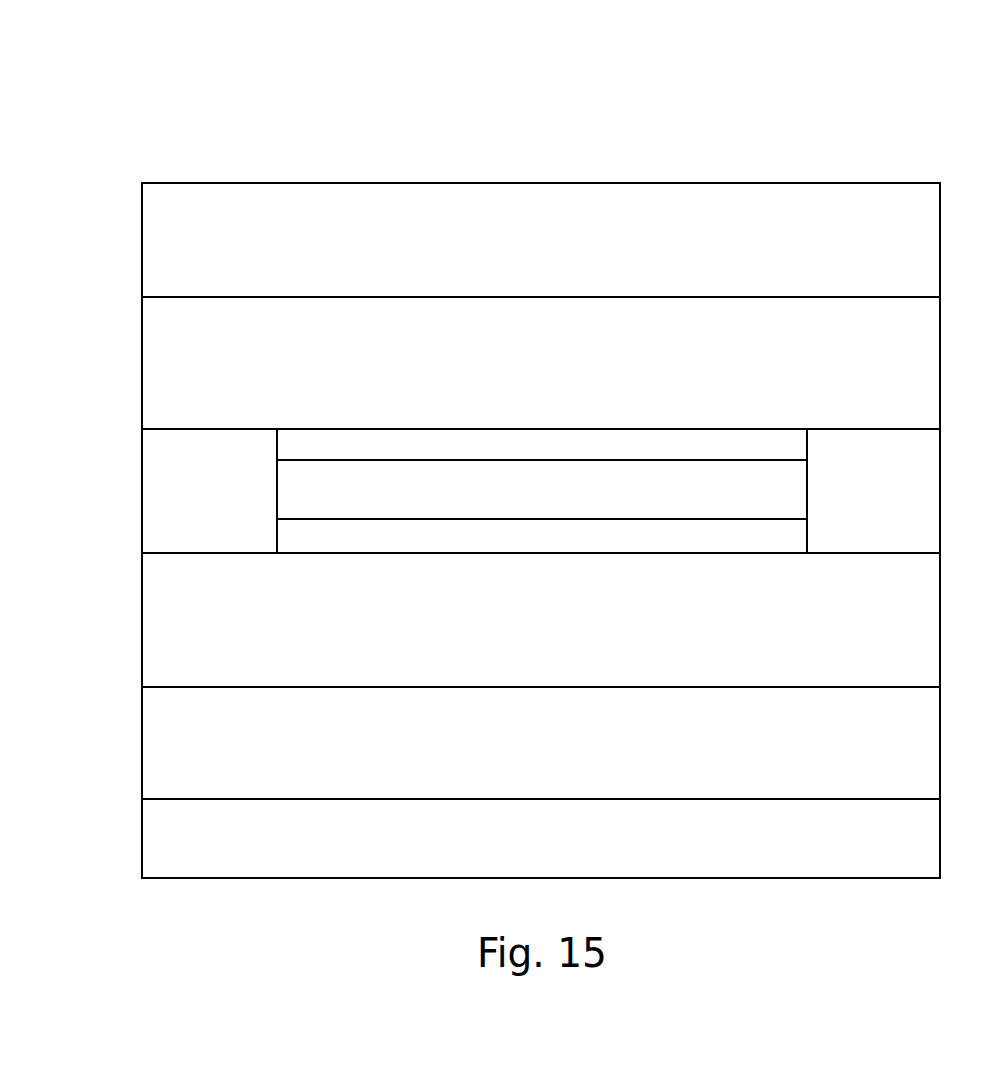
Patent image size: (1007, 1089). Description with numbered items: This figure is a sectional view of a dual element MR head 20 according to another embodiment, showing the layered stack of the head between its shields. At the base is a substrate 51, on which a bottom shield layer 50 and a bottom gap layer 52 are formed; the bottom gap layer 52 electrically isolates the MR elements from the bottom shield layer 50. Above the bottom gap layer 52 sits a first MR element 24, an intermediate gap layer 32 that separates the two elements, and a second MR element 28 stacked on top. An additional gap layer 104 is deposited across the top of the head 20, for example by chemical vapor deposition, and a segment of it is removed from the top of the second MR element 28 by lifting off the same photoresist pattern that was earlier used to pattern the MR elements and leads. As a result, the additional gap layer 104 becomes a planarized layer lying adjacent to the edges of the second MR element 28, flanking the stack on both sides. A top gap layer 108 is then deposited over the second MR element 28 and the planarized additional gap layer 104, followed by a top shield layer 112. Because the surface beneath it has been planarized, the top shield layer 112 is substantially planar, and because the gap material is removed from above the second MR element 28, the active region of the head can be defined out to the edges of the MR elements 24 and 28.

The dual element MR head 20 is at (143, 156).
The top shield layer 112 is at (565, 262).
The top gap layer 108 is at (565, 389).
The additional gap layer 104 is at (233, 513).
The second MR element 28 is at (524, 457).
The intermediate gap layer 32 is at (521, 507).
The first MR element 24 is at (523, 550).
The bottom gap layer 52 is at (522, 646).
The bottom shield layer 50 is at (520, 760).
The substrate 51 is at (524, 857).